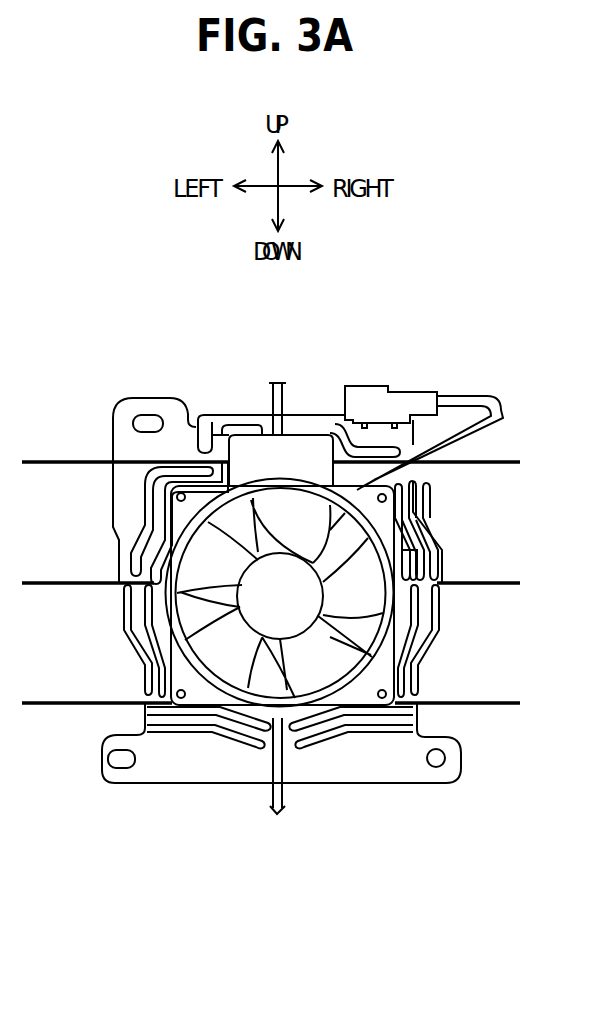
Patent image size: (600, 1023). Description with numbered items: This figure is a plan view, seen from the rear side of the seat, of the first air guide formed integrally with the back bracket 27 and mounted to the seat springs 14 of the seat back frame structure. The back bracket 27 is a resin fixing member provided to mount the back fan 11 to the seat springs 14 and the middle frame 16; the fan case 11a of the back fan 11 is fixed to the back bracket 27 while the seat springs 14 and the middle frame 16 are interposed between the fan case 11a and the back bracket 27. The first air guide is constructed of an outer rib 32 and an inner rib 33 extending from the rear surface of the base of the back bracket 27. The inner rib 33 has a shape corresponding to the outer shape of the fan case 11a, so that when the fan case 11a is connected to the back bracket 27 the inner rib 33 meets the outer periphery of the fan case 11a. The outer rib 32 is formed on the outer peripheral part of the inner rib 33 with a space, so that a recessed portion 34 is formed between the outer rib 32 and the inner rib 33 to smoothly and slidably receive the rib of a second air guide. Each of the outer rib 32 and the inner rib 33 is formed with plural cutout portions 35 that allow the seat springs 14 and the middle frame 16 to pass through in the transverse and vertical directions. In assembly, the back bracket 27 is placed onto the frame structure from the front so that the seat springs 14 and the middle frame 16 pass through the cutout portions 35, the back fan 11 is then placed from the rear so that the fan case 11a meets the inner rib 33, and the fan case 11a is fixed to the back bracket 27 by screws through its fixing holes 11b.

The back fan 11 is at (332, 668).
The fan case 11a is at (193, 696).
The fixing holes 11b is at (177, 498).
The seat springs 14 is at (480, 703).
The middle frame 16 is at (285, 397).
The back bracket 27 is at (172, 783).
The outer rib 32 is at (230, 416).
The inner rib 33 is at (256, 435).
The recessed portion 34 is at (190, 427).
The cutout portions 35 is at (122, 580).